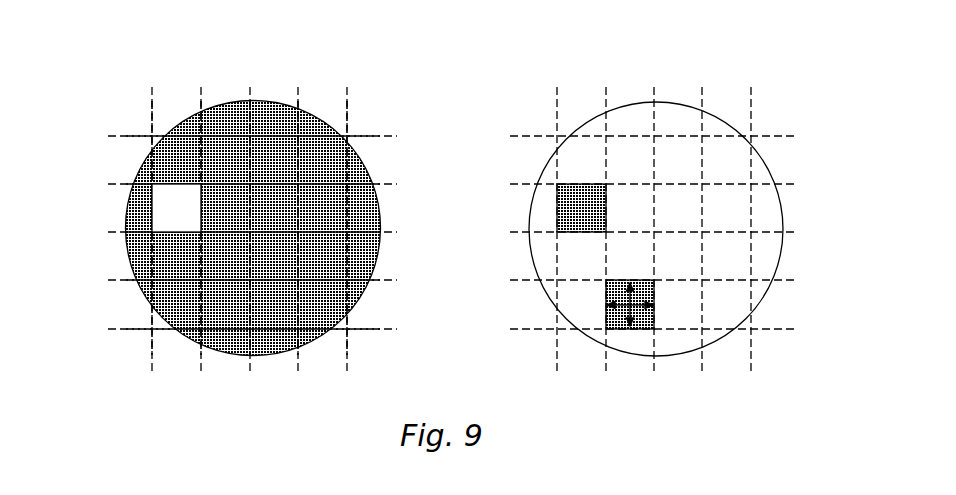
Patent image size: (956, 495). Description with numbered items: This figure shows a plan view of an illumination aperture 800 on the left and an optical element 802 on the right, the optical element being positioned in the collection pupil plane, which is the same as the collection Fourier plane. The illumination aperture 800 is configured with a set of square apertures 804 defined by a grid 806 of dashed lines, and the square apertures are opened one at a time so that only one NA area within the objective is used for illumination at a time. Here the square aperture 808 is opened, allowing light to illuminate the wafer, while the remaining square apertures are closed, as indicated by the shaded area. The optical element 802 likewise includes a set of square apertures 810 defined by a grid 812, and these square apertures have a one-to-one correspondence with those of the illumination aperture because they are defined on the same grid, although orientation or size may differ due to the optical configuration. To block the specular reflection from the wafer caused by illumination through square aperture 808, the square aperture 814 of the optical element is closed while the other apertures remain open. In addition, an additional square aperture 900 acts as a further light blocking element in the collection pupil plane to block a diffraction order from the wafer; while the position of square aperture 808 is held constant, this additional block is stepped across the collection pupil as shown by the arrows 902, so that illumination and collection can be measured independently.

The illumination aperture 800 is at (170, 64).
The optical element 802 is at (727, 53).
The square apertures 804 is at (362, 212).
The grid 806 is at (380, 136).
The square aperture 808 is at (178, 212).
The square apertures 810 is at (770, 208).
The grid 812 is at (775, 135).
The square aperture 814 is at (573, 207).
The additional square aperture 900 is at (613, 320).
The arrows 902 is at (637, 310).